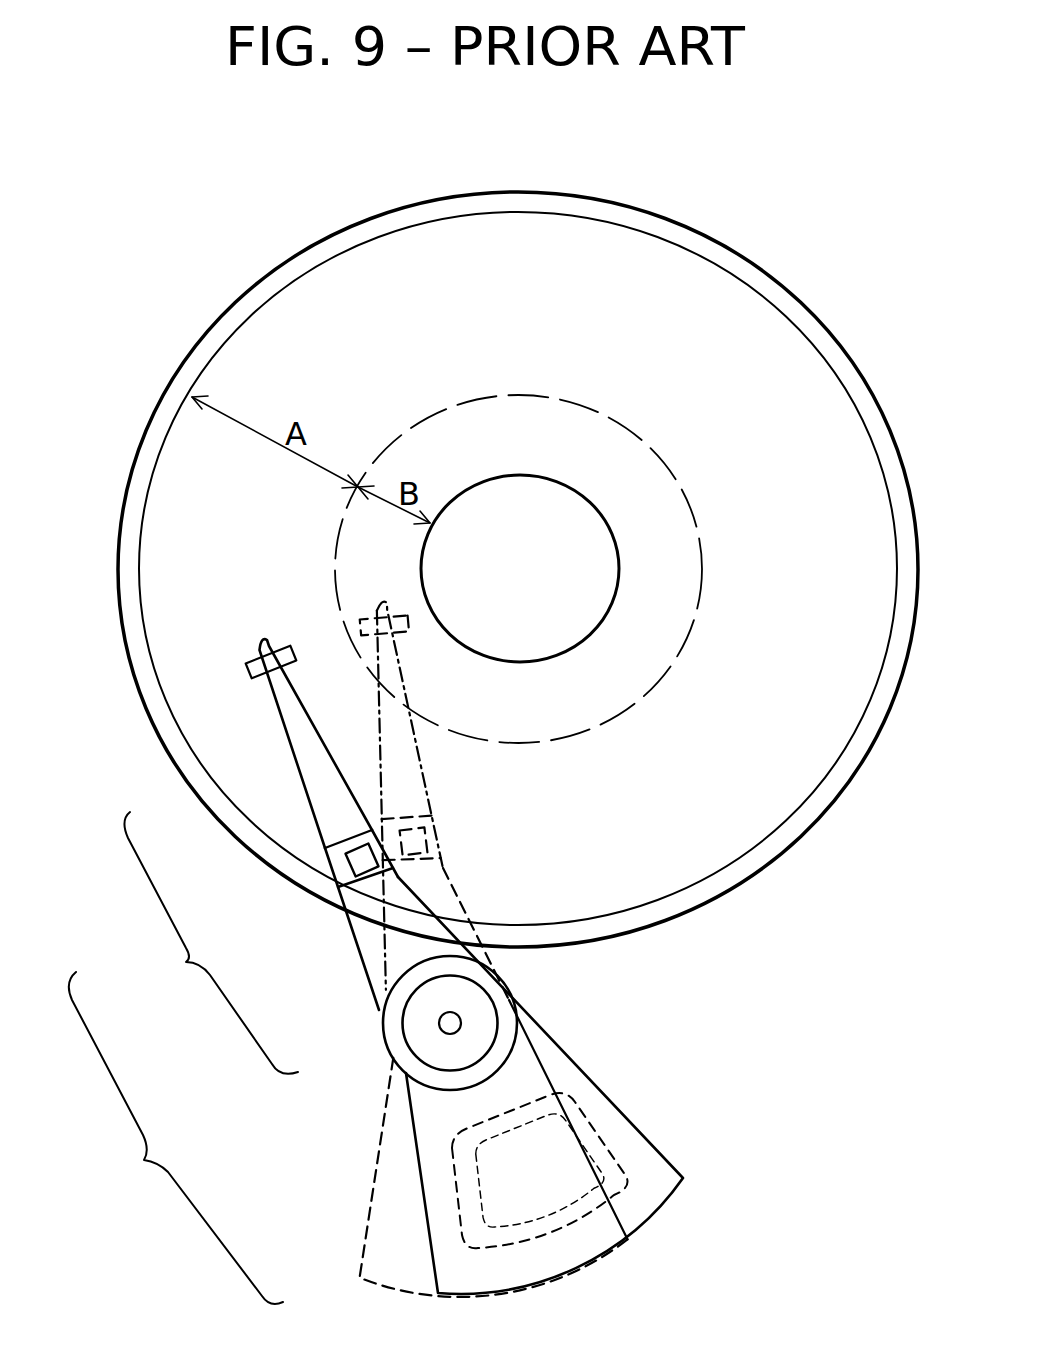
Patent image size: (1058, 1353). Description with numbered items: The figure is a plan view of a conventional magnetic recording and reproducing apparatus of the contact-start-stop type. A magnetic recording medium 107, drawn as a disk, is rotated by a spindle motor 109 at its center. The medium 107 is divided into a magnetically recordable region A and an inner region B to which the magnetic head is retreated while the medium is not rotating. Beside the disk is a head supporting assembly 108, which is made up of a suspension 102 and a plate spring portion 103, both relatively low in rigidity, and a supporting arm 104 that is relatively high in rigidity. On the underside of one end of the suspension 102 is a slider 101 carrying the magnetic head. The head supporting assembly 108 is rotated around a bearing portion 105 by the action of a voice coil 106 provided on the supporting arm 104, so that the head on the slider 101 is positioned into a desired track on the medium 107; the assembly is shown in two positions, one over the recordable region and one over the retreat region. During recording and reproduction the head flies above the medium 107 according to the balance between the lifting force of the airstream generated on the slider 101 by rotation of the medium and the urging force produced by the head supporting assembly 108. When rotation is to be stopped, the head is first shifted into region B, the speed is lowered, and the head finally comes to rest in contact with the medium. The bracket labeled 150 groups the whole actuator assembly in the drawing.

The slider 101 is at (256, 672).
The suspension 102 is at (290, 733).
The plate spring portion 103 is at (343, 872).
The supporting arm 104 is at (367, 970).
The bearing portion 105 is at (381, 1040).
The voice coil 106 is at (425, 1207).
The magnetic recording medium 107 is at (300, 327).
The head supporting assembly 108 is at (211, 943).
The spindle motor 109 is at (588, 490).
The actuator assembly 150 is at (176, 1138).